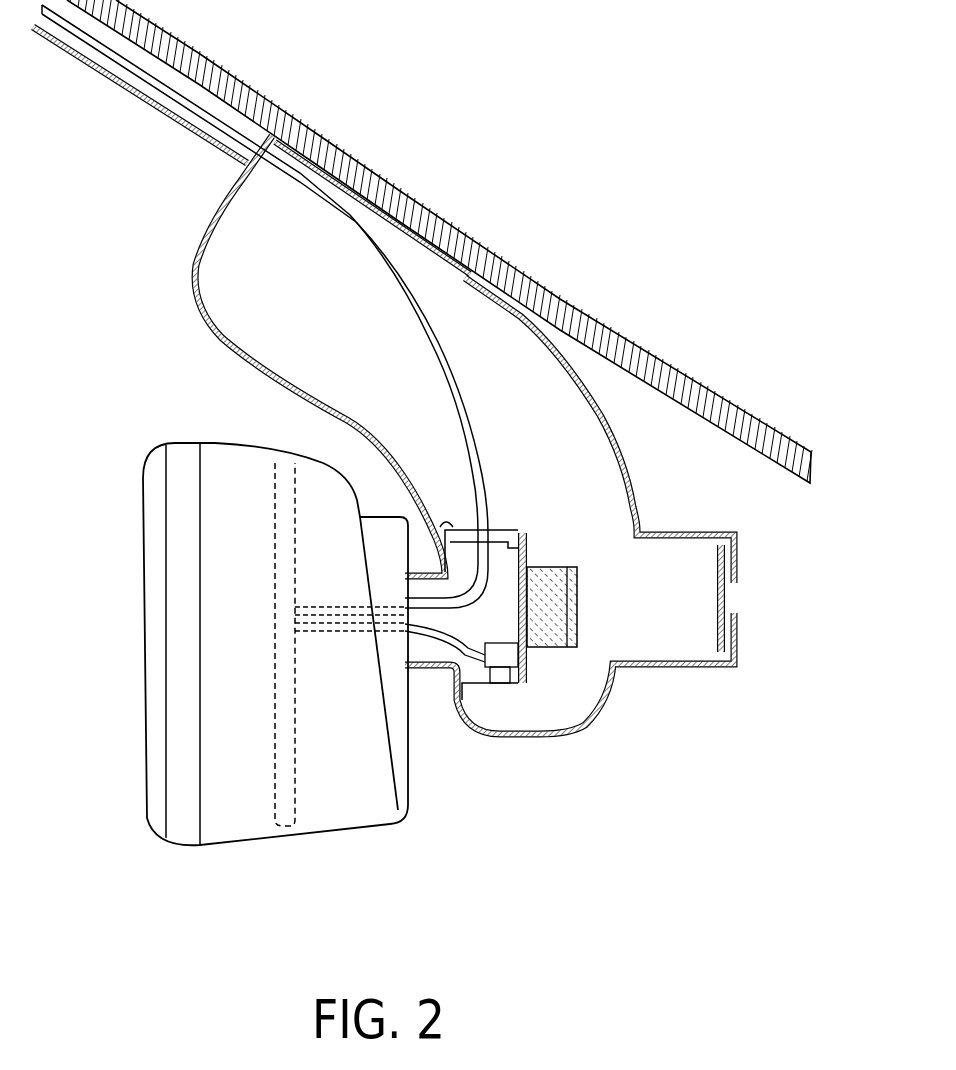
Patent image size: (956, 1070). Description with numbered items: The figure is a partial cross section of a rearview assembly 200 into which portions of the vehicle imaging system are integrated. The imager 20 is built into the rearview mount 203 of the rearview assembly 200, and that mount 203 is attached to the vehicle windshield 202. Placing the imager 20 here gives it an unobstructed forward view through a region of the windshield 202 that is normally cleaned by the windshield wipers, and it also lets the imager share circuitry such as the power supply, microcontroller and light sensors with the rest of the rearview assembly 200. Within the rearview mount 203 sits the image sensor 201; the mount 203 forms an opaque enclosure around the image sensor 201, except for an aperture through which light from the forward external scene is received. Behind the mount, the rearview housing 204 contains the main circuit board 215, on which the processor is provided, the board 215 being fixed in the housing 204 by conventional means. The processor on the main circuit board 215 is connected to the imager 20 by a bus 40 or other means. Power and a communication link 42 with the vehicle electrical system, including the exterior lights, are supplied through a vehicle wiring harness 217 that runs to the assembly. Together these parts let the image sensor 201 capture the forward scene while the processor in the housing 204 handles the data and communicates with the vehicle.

The imager 20 is at (567, 663).
The bus 40 is at (440, 642).
The communication link 42 is at (462, 457).
The rearview assembly 200 is at (190, 857).
The image sensor 201 is at (518, 603).
The windshield 202 is at (510, 232).
The rearview mount 203 is at (237, 252).
The rearview housing 204 is at (143, 723).
The main circuit board 215 is at (297, 760).
The vehicle wiring harness 217 is at (450, 392).